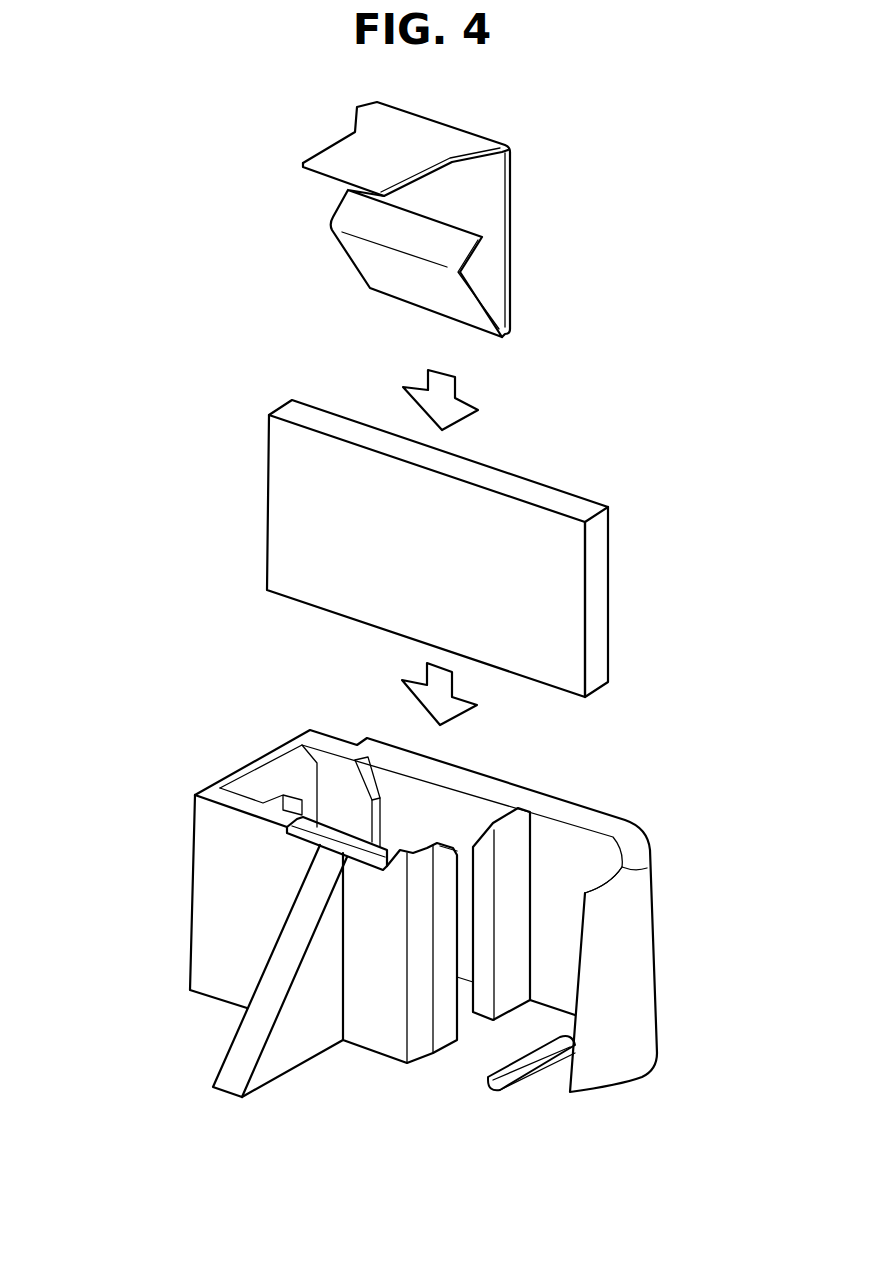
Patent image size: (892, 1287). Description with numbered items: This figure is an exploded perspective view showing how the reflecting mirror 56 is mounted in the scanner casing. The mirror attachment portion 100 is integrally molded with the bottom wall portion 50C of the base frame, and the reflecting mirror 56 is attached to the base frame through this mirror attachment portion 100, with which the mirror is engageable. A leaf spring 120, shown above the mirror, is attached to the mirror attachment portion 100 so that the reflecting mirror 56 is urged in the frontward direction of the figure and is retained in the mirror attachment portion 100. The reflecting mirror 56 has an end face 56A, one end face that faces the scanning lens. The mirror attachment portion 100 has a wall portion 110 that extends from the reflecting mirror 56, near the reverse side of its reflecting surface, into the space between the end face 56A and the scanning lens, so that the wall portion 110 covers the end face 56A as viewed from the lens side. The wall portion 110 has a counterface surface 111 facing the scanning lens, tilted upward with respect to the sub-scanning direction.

The bottom wall portion 50C is at (381, 1149).
The leaf spring 120 is at (303, 122).
The reflecting mirror 56 is at (257, 388).
The end face 56A is at (597, 617).
The mirror attachment portion 100 is at (215, 750).
The wall portion 110 is at (605, 887).
The counterface surface 111 is at (598, 1010).